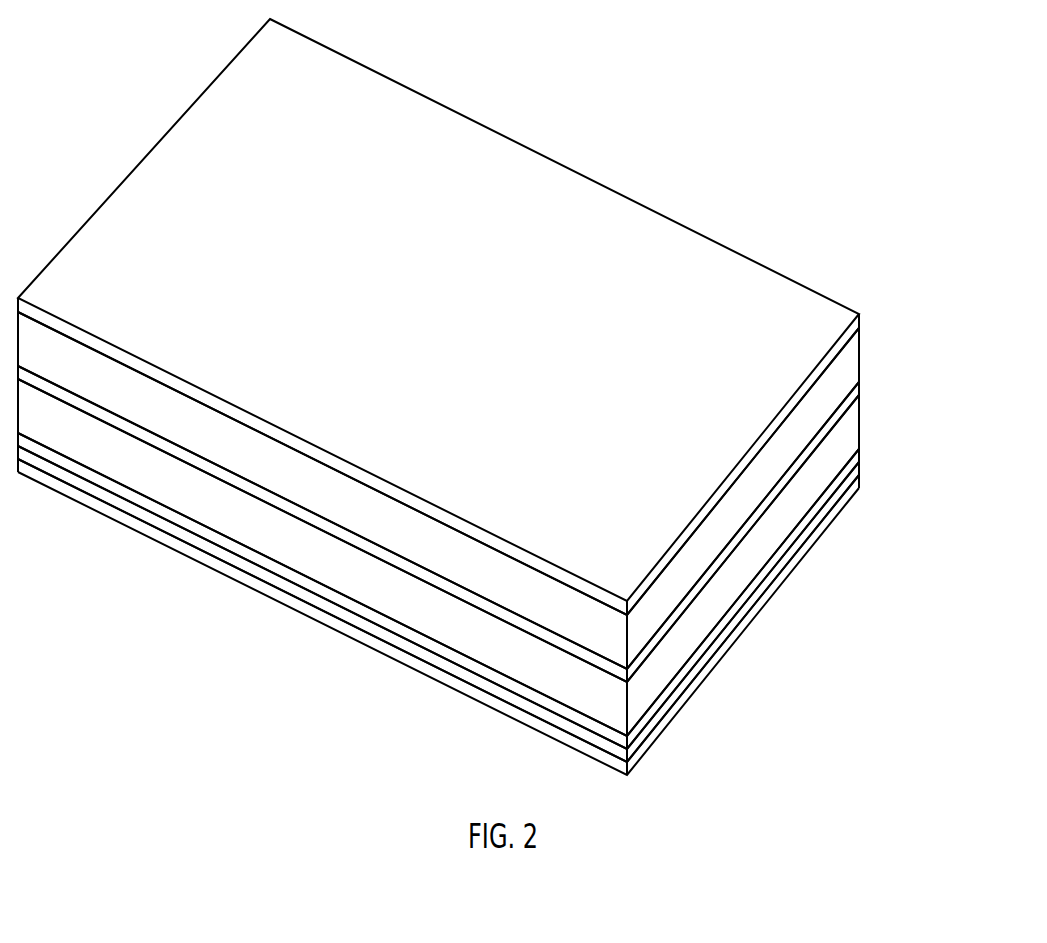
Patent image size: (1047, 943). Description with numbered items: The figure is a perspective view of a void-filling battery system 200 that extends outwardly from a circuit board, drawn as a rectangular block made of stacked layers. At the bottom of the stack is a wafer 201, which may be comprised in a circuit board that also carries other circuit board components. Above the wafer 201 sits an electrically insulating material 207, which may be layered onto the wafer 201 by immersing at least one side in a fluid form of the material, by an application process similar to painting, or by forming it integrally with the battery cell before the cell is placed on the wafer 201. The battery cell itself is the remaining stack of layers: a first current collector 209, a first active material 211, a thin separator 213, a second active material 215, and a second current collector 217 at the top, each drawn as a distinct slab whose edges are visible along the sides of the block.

The void-filling battery system 200 is at (952, 131).
The wafer 201 is at (859, 484).
The electrically insulating material 207 is at (859, 470).
The first current collector 209 is at (859, 457).
The first active material 211 is at (859, 422).
The separator 213 is at (859, 389).
The second active material 215 is at (859, 364).
The second current collector 217 is at (859, 322).